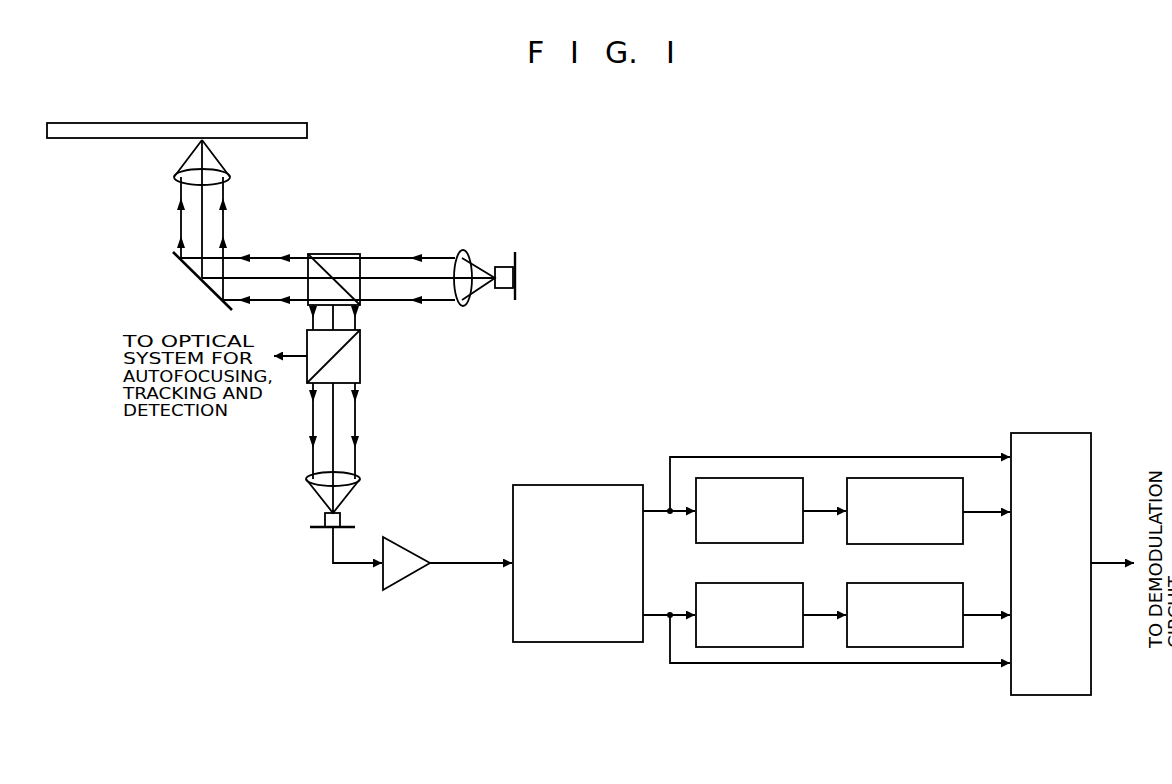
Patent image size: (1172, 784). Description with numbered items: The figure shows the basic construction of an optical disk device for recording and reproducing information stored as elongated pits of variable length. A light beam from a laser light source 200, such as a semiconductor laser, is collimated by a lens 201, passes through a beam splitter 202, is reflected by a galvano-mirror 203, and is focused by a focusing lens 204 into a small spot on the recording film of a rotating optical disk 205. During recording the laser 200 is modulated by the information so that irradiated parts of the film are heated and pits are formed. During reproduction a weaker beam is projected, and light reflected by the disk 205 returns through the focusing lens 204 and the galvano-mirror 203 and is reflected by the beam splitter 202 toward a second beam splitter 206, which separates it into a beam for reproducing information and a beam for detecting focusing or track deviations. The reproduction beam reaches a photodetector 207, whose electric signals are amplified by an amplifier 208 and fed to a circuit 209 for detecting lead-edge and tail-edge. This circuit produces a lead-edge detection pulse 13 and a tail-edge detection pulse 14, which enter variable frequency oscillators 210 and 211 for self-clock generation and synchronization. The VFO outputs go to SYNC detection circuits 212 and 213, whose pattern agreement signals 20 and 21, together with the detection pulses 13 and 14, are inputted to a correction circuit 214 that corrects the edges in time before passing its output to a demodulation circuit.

The laser light source 200 is at (517, 259).
The lens 201 is at (463, 250).
The beam splitter 202 is at (339, 252).
The galvano-mirror 203 is at (176, 261).
The focusing lens 204 is at (232, 171).
The optical disk 205 is at (283, 121).
The beam splitter 206 is at (361, 357).
The photodetector 207 is at (342, 518).
The amplifier 208 is at (400, 584).
The circuit for detecting lead-edge and tail-edge 209 is at (586, 484).
The variable frequency oscillator 210 is at (745, 477).
The variable frequency oscillator 211 is at (742, 648).
The SYNC detection circuit 212 is at (857, 544).
The SYNC detection circuit 213 is at (890, 648).
The correction circuit 214 is at (1058, 432).
The lead-edge detection pulse 13 is at (953, 455).
The tail-edge detection pulse 14 is at (967, 664).
The pattern agreement signal 20 is at (983, 514).
The pattern agreement signal 21 is at (981, 614).